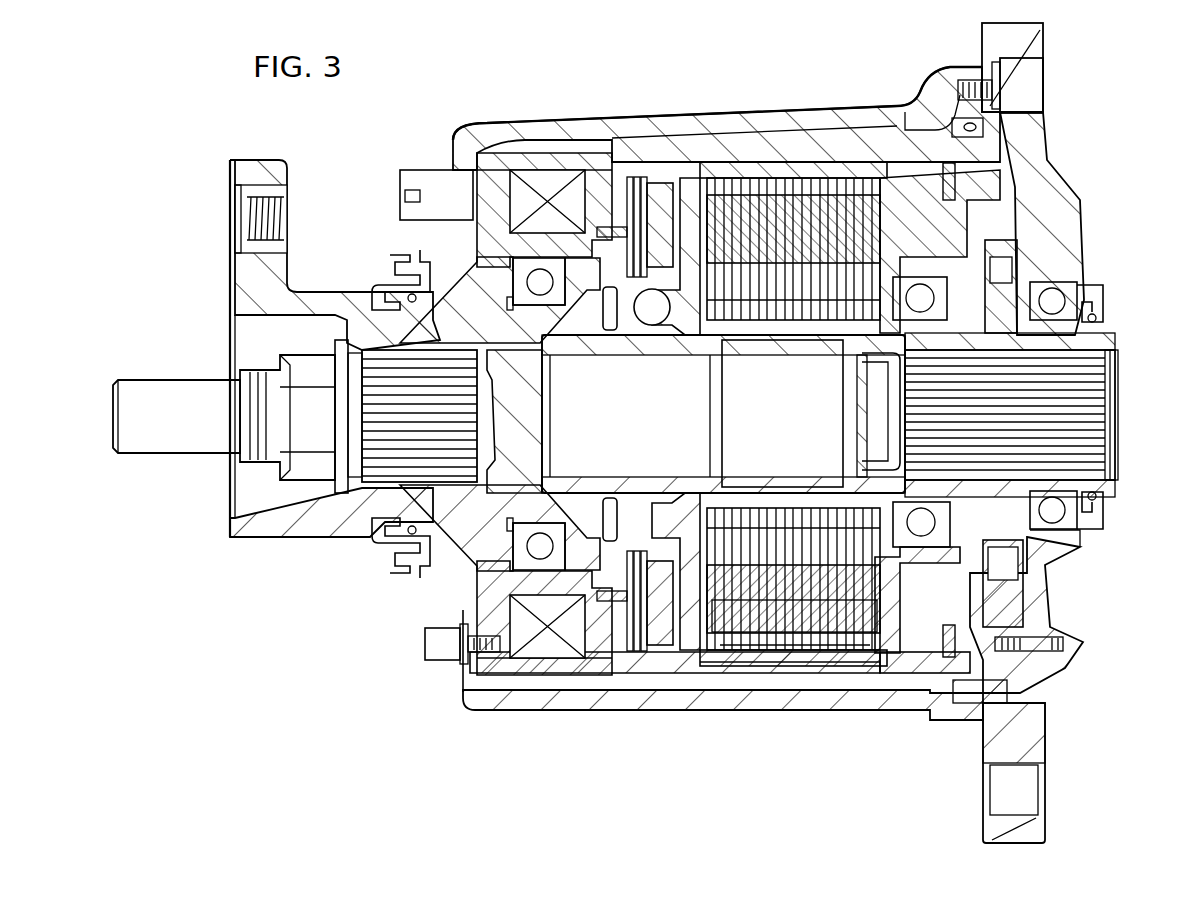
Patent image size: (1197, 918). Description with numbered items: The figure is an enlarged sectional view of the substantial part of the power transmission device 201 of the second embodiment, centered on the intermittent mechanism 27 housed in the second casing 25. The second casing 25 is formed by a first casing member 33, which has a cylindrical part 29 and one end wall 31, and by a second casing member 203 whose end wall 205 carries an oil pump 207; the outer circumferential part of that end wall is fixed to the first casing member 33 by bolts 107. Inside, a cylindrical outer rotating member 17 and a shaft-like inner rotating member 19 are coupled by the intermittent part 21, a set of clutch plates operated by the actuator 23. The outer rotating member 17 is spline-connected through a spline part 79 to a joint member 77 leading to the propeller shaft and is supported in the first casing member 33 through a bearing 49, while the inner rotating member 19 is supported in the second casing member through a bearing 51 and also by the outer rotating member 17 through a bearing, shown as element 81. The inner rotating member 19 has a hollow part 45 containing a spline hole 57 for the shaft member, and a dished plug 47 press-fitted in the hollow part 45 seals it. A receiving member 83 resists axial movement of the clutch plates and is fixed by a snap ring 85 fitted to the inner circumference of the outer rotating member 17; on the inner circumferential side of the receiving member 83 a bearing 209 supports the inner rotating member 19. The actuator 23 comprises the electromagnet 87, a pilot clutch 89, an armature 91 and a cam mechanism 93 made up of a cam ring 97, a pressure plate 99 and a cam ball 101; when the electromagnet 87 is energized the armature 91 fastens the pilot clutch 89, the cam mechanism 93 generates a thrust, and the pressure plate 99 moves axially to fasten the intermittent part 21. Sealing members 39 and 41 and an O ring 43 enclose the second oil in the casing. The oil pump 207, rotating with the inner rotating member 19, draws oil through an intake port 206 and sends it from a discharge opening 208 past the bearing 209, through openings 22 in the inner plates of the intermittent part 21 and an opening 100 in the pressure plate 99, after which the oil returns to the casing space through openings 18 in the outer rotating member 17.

The outer rotating member 17 is at (776, 185).
The openings 18 is at (700, 155).
The inner rotating member 19 is at (760, 345).
The intermittent part 21 is at (818, 165).
The openings 22 is at (858, 560).
The actuator 23 is at (483, 120).
The second casing 25 is at (905, 112).
The intermittent mechanism 27 is at (738, 112).
The cylindrical part 29 is at (668, 182).
The end wall 31 is at (482, 692).
The first casing member 33 is at (660, 712).
The sealing member 39 is at (398, 258).
The sealing member 41 is at (1105, 318).
The O ring 43 is at (978, 135).
The hollow part 45 is at (762, 590).
The dished plug 47 is at (895, 430).
The bearing 49 is at (514, 282).
The bearing 51 is at (1060, 295).
The spline hole 57 is at (1080, 408).
The joint member 77 is at (278, 268).
The spline part 79 is at (350, 350).
The rotor hub 81 is at (572, 350).
The receiving member 83 is at (885, 172).
The snap ring 85 is at (956, 194).
The electromagnet 87 is at (538, 152).
The pilot clutch 89 is at (608, 160).
The armature 91 is at (632, 200).
The cam mechanism 93 is at (652, 357).
The cam ring 97 is at (622, 328).
The pressure plate 99 is at (682, 340).
The opening 100 is at (700, 640).
The cam ball 101 is at (628, 175).
The bolts 107 is at (1020, 75).
The power transmission device 201 is at (665, 95).
The second casing member 203 is at (1046, 140).
The end wall 205 is at (1042, 592).
The intake port 206 is at (1050, 672).
The oil pump 207 is at (1005, 268).
The discharge opening 208 is at (1070, 560).
The bearing 209 is at (918, 290).